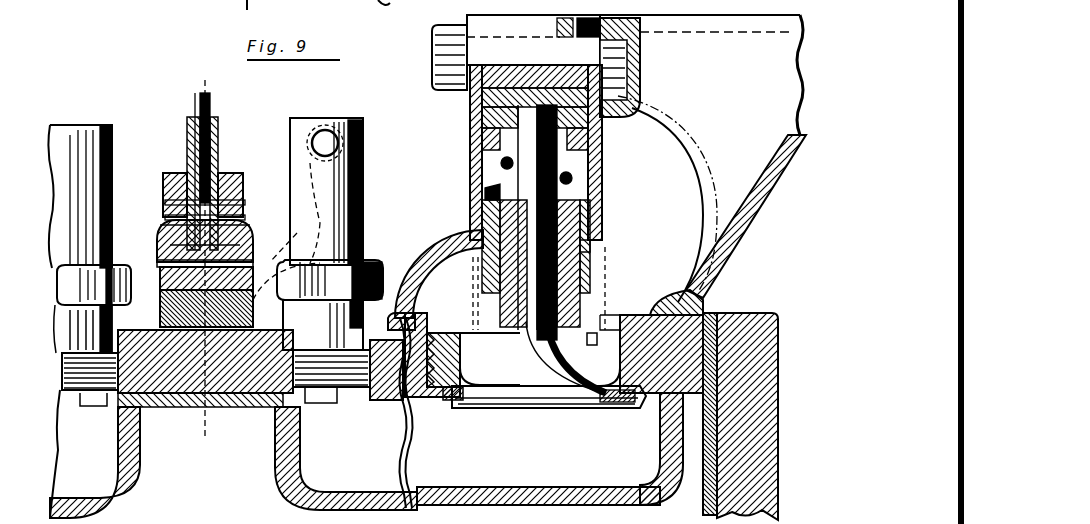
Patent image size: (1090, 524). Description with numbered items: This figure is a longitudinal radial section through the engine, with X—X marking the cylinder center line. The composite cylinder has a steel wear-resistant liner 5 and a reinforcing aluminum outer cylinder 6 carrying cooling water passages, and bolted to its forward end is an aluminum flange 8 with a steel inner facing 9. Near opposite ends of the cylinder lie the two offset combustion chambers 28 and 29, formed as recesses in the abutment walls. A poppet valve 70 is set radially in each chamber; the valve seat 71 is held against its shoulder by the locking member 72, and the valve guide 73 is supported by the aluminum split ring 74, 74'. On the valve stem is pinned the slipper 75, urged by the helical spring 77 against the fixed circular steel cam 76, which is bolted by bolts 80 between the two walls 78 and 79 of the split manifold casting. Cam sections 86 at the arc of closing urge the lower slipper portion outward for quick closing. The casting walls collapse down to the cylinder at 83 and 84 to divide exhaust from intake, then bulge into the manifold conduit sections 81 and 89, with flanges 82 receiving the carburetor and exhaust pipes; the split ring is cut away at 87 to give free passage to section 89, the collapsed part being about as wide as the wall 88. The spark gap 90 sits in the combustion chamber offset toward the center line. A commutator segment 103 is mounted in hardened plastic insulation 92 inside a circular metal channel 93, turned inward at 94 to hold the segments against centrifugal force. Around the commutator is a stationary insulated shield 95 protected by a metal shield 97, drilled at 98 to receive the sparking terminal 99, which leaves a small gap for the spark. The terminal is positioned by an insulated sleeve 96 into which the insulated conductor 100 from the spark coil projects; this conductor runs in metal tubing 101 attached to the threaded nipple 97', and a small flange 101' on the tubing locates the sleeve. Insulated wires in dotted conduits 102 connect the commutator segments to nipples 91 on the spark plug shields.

The cylinder liner 5 is at (178, 405).
The reinforcing outer cylinder 6 is at (260, 385).
The flange 8 is at (779, 340).
The steel inner facing 9 is at (715, 318).
The combustion chamber 28 is at (550, 449).
The combustion chamber 29 is at (89, 321).
The poppet valve 70 is at (568, 400).
The valve seat 71 is at (455, 402).
The locking member 72 is at (450, 350).
The valve guide 73 is at (507, 345).
The split ring 74 is at (512, 245).
The split ring 74' is at (572, 263).
The slipper 75 is at (470, 108).
The circular steel cam 76 is at (535, 70).
The helical spring 77 is at (501, 162).
The split manifold casting wall 78 is at (487, 192).
The split manifold casting wall 79 is at (683, 142).
The bolts 80 is at (445, 72).
The exhaust manifold conduit section 81 is at (667, 205).
The flange 82 is at (613, 22).
The collapsed manifold wall 83 is at (473, 290).
The collapsed manifold wall 84 is at (604, 318).
The cam section 86 is at (482, 135).
The cut-away 87 is at (590, 247).
The wall 88 is at (592, 345).
The manifold conduit section 89 is at (432, 270).
The spark gap 90 is at (97, 408).
The projecting nipple 91 is at (330, 126).
The hardened plastic insulation 92 is at (162, 283).
The circular metal channel 93 is at (162, 307).
The inturned portion 94 is at (158, 263).
The insulated shield 95 is at (247, 238).
The insulated sleeve 96 is at (240, 178).
The metal shield 97 is at (221, 211).
The threaded projecting nipple 97' is at (223, 192).
The drilled hole 98 is at (167, 223).
The sparking terminal 99 is at (163, 243).
The insulated conductor 100 is at (210, 103).
The metal tubing 101 is at (223, 182).
The small flange 101' is at (236, 154).
The conduit 102 is at (362, 190).
The commutator segment 103 is at (193, 268).